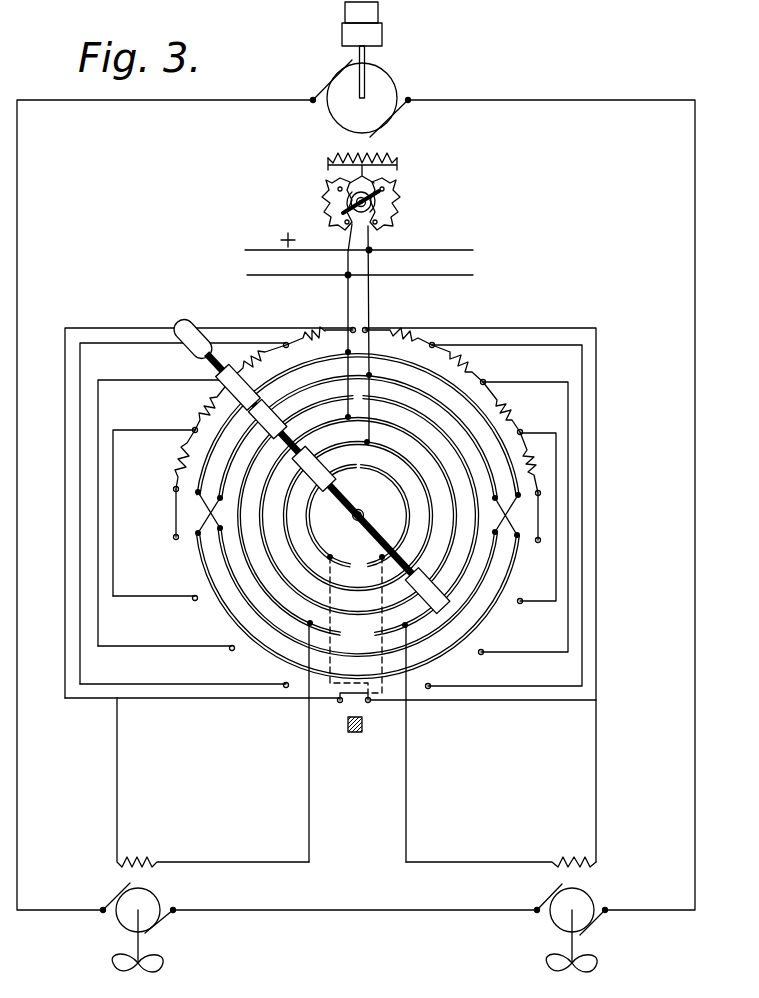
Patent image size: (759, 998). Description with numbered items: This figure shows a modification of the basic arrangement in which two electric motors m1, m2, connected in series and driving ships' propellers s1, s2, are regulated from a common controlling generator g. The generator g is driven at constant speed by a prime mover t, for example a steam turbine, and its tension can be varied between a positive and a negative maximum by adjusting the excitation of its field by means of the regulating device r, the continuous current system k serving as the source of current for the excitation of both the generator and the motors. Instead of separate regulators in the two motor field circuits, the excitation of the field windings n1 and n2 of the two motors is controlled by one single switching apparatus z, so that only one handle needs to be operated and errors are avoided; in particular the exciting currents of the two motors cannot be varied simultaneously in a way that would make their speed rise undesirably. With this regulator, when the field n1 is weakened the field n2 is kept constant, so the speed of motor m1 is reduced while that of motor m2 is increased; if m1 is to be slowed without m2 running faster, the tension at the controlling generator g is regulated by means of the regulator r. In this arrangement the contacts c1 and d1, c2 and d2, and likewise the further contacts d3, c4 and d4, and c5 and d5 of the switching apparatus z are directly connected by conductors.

The prime mover t is at (388, 36).
The controlling generator g is at (369, 91).
The regulating device r is at (398, 219).
The continuous current system k is at (440, 283).
The contact c1 is at (365, 326).
The contact c2 is at (288, 328).
The contact c4 is at (177, 422).
The contact c5 is at (170, 494).
The contact d1 is at (342, 713).
The contact d2 is at (269, 683).
The contact d3 is at (212, 664).
The contact d4 is at (176, 607).
The contact d5 is at (156, 522).
The switching apparatus z is at (310, 464).
The field winding n1 is at (213, 782).
The field winding n2 is at (501, 848).
The motor m1 is at (158, 905).
The motor m2 is at (547, 907).
The ship's propeller s1 is at (154, 944).
The ship's propeller s2 is at (551, 945).